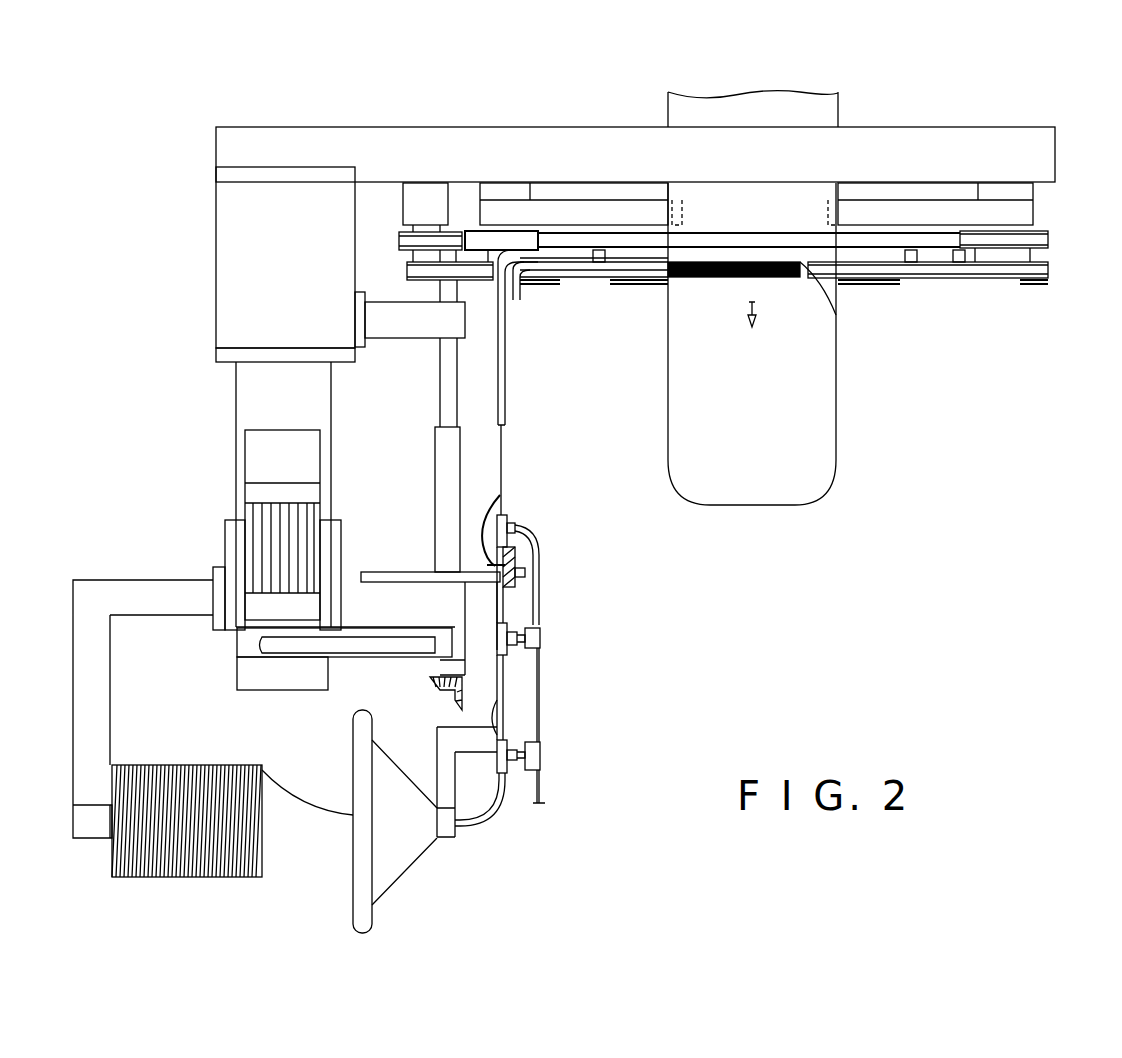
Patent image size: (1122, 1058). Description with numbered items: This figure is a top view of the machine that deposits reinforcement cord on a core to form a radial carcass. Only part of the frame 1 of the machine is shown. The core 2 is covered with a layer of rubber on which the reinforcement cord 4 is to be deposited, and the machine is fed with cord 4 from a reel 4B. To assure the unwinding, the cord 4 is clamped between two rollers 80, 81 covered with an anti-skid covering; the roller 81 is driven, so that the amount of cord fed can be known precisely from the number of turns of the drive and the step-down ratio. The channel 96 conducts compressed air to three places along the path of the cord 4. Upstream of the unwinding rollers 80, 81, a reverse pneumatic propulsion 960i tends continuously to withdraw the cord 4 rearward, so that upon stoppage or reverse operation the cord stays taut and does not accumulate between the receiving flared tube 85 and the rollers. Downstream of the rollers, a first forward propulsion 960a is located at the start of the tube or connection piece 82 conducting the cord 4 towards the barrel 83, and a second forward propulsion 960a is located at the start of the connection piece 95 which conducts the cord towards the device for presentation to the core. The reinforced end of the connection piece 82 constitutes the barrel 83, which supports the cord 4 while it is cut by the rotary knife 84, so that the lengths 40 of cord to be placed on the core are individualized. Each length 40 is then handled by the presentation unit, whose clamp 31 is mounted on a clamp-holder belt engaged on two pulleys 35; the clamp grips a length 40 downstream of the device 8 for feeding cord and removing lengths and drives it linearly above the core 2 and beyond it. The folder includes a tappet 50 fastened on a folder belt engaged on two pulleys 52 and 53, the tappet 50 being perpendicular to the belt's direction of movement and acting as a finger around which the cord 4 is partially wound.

The frame 1 is at (1040, 140).
The core 2 is at (710, 520).
The reinforcement cord 4 is at (300, 808).
The reel 4B is at (166, 880).
The device for the feeding of cord and removal of lengths 8 is at (565, 650).
The clamp 31 is at (958, 263).
The pulleys 35 is at (401, 232).
The length of cord 40 is at (712, 262).
The tappet 50 is at (598, 262).
The pulley 52 is at (533, 284).
The pulley 53 is at (642, 284).
The unwinding roller 80 is at (497, 733).
The unwinding roller 81 is at (507, 683).
The connection piece 82 is at (505, 614).
The barrel 83 is at (520, 583).
The rotary knife 84 is at (505, 493).
The receiving flared tube 85 is at (393, 868).
The connection piece 95 is at (506, 438).
The channel 96 is at (543, 787).
The forward propulsion 960a is at (518, 527).
The reverse pneumatic propulsion 960i is at (510, 762).